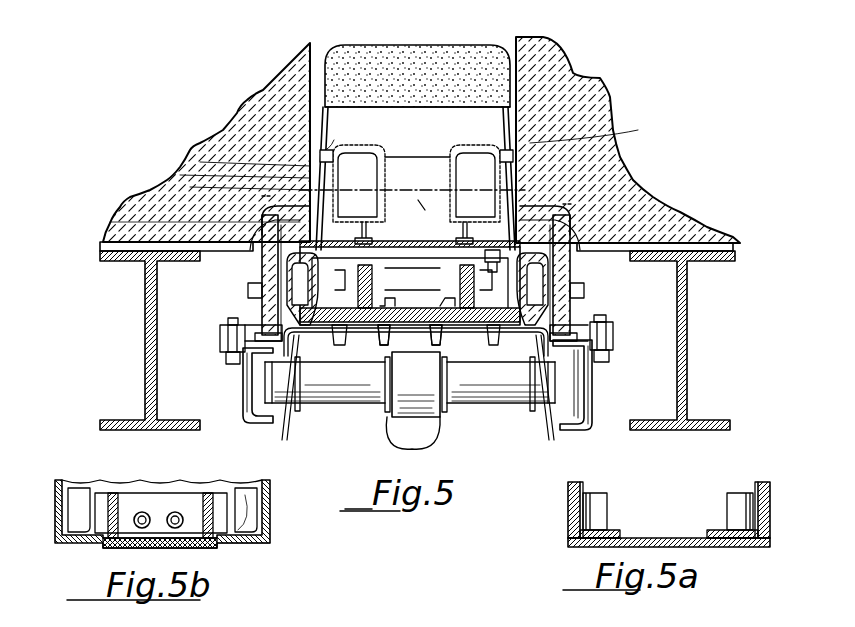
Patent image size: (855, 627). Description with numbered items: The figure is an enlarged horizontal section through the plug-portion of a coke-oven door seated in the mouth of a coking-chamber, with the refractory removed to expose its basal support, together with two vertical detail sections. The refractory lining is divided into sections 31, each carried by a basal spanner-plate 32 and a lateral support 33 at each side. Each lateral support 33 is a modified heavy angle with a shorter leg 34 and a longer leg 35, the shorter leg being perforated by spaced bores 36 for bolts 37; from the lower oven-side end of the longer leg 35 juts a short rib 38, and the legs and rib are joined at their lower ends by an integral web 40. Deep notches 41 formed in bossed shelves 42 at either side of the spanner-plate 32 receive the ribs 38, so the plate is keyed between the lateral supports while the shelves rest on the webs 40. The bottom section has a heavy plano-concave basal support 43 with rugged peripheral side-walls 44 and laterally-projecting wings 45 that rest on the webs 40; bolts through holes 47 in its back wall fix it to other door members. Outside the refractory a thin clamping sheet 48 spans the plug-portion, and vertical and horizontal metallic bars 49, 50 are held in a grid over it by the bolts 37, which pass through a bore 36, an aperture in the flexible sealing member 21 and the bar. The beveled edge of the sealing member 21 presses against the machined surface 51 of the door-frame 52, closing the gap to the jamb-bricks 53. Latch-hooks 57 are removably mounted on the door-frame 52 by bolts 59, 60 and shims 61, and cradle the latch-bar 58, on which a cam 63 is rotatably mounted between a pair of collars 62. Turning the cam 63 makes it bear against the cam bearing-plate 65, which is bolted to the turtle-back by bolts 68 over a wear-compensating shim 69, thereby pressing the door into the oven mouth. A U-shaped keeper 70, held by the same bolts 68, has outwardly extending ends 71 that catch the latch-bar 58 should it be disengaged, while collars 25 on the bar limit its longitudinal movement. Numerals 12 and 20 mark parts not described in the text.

In FIG. 5, the frame member 12 is at (310, 318).
In FIG. 5, the side plate 20 is at (552, 276).
In FIG. 5, the flexible sealing member 21 is at (287, 257).
In FIG. 5, the flange 25 is at (302, 412).
In FIG. 5, the section of refractory lining 31 is at (412, 45).
In FIG. 5, the basal spanner-plate 32 is at (410, 133).
In FIG. 5A, the basal spanner-plate 32 is at (665, 538).
In FIG. 5, the lateral support 33 is at (310, 167).
In FIG. 5A, the lateral support 33 is at (808, 503).
In FIG. 5B, the lateral support 33 is at (308, 521).
In FIG. 5, the shorter angle-leg 34 is at (362, 222).
In FIG. 5, the longer angle-leg 35 is at (310, 177).
In FIG. 5A, the longer angle-leg 35 is at (568, 529).
In FIG. 5, the bore 36 is at (137, 213).
In FIG. 5, the bolt 37 is at (290, 204).
In FIG. 5, the rib 38 is at (343, 150).
In FIG. 5A, the rib 38 is at (594, 493).
In FIG. 5, the web 40 is at (303, 190).
In FIG. 5A, the web 40 is at (578, 546).
In FIG. 5B, the web 40 is at (255, 548).
In FIG. 5, the notch 41 is at (612, 130).
In FIG. 5, the bossed shelf 42 is at (417, 153).
In FIG. 5B, the basal support 43 is at (85, 569).
In FIG. 5B, the peripheral side-wall 44 is at (113, 493).
In FIG. 5B, the laterally-projecting wing 45 is at (262, 495).
In FIG. 5B, the hole 47 is at (175, 512).
In FIG. 5, the clamping sheet 48 is at (385, 250).
In FIG. 5, the vertical metallic bar 49 is at (492, 268).
In FIG. 5, the horizontal metallic bar 50 is at (390, 255).
In FIG. 5, the machined surface 51 is at (268, 218).
In FIG. 5, the door-frame 52 is at (262, 277).
In FIG. 5, the jamb-brick 53 is at (117, 231).
In FIG. 5, the latch-hook 57 is at (248, 392).
In FIG. 5, the latch-bar 58 is at (352, 405).
In FIG. 5, the bolt 59 is at (227, 320).
In FIG. 5, the bolt 60 is at (608, 322).
In FIG. 5, the shim 61 is at (222, 337).
In FIG. 5, the collar 62 is at (418, 446).
In FIG. 5, the cam 63 is at (422, 358).
In FIG. 5, the cam bearing-plate 65 is at (441, 347).
In FIG. 5, the bolt 68 is at (380, 347).
In FIG. 5, the shim 69 is at (432, 305).
In FIG. 5, the keeper 70 is at (300, 335).
In FIG. 5, the outwardly extending end 71 is at (295, 442).